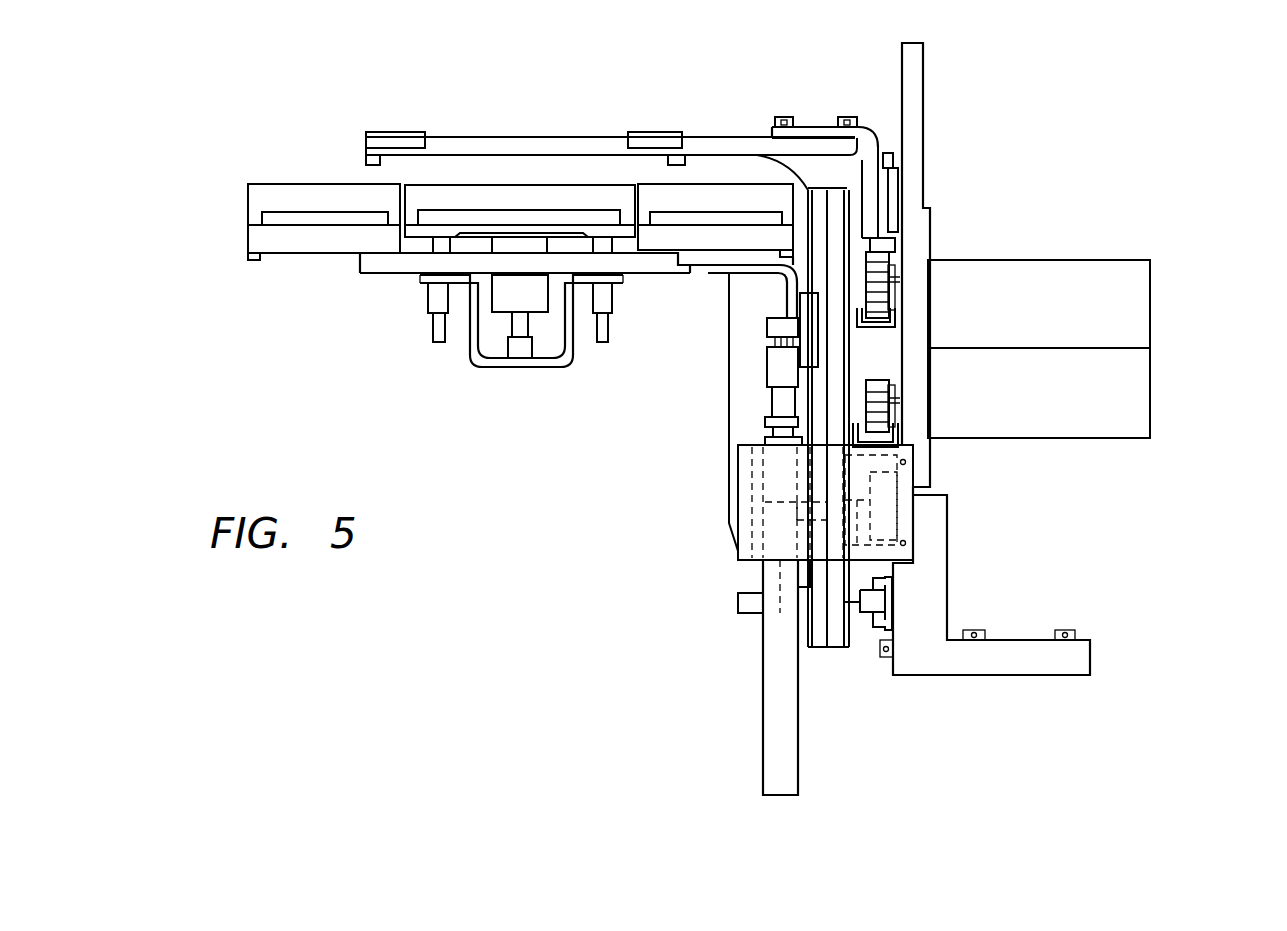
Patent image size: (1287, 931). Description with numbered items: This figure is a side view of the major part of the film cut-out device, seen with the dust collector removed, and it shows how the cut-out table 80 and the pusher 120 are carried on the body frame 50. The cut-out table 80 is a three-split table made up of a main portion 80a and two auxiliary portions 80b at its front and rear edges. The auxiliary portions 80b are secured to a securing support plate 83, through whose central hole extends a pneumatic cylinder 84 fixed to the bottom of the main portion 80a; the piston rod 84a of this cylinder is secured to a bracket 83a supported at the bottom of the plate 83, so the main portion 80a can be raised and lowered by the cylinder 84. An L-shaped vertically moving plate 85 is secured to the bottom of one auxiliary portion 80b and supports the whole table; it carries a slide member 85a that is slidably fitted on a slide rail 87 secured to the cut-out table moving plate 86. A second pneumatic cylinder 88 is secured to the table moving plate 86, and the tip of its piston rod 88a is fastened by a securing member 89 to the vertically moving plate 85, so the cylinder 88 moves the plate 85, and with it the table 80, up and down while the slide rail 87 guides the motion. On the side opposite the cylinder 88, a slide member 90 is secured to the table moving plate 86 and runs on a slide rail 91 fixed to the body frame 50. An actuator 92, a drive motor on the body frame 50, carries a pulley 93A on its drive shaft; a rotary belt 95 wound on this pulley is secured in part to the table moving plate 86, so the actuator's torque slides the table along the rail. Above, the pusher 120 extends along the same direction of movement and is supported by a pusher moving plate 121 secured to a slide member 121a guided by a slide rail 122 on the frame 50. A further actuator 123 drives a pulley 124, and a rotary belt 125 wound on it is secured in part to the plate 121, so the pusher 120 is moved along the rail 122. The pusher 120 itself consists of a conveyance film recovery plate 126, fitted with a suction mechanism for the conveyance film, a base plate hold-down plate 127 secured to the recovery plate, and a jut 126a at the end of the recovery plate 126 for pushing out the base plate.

The body frame 50 is at (928, 80).
The cut-out table 80 is at (474, 158).
The main portion 80a is at (512, 198).
The auxiliary portions 80b is at (290, 194).
The securing support plate 83 is at (358, 258).
The bracket 83a is at (467, 357).
The pneumatic cylinder 84 is at (538, 302).
The piston rod 84a is at (523, 352).
The vertically moving plate 85 is at (708, 266).
The slide member 85a is at (803, 301).
The cut-out table moving plate 86 is at (840, 189).
The slide rail 87 is at (835, 192).
The pneumatic cylinder 88 is at (770, 765).
The piston rod 88a is at (778, 365).
The securing member 89 is at (777, 327).
The slide member 90 is at (895, 518).
The slide rail 91 is at (912, 510).
The actuator 92 is at (1150, 393).
The pulley 93A is at (900, 413).
The rotary belt 95 is at (872, 385).
The pusher 120 is at (462, 134).
The pusher moving plate 121 is at (812, 130).
The slide member 121a is at (888, 152).
The slide rail 122 is at (897, 183).
The actuator 123 is at (1150, 311).
The pulley 124 is at (900, 300).
The rotary belt 125 is at (873, 253).
The conveyance film recovery plate 126 is at (577, 140).
The jut 126a is at (365, 157).
The base plate hold-down plate 127 is at (388, 132).